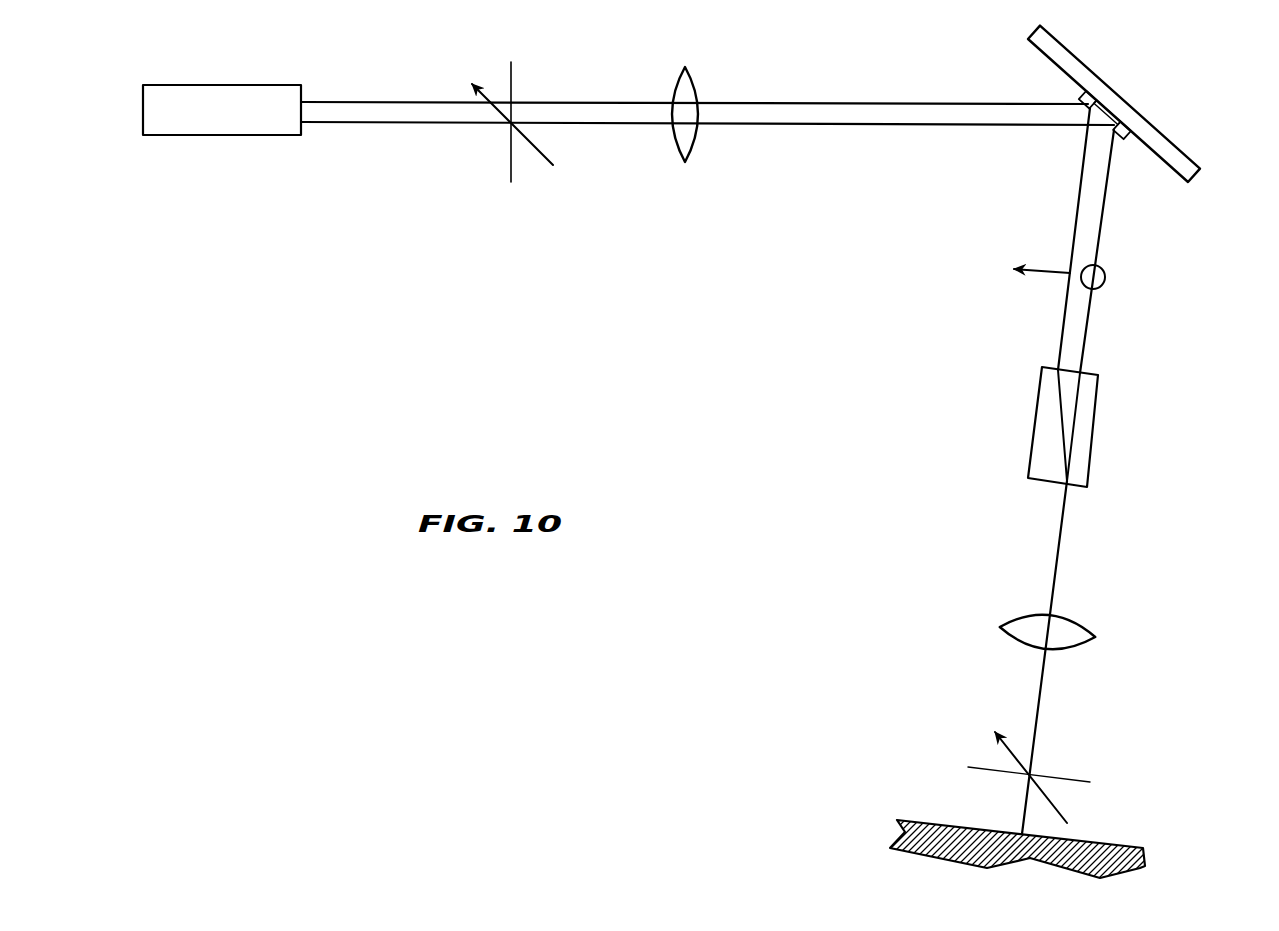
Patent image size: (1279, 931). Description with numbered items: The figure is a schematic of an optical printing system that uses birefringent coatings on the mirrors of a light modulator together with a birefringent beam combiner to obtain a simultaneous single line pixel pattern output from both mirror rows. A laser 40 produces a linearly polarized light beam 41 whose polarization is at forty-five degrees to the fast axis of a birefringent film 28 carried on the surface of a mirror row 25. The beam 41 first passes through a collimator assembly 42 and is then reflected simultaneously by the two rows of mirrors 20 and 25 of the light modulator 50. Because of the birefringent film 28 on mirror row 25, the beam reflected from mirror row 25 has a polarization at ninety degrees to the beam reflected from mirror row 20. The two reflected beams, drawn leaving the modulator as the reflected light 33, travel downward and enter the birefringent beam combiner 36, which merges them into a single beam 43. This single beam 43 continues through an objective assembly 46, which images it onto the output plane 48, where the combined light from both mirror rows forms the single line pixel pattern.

The laser 40 is at (222, 135).
The linearly polarized light beam 41 is at (793, 103).
The collimator assembly 42 is at (686, 180).
The light modulator 50 is at (1135, 83).
The mirror row 25 is at (1080, 97).
The mirror row 20 is at (1121, 134).
The birefringent film 28 is at (1088, 110).
The reflected beam 33 is at (1090, 327).
The birefringent beam combiner 36 is at (1037, 425).
The single beam 43 is at (1060, 552).
The objective assembly 46 is at (984, 621).
The output plane 48 is at (1112, 843).